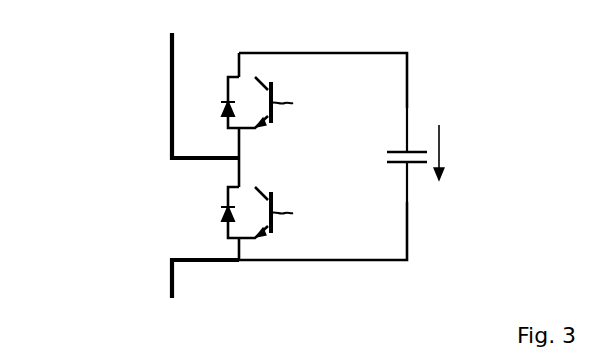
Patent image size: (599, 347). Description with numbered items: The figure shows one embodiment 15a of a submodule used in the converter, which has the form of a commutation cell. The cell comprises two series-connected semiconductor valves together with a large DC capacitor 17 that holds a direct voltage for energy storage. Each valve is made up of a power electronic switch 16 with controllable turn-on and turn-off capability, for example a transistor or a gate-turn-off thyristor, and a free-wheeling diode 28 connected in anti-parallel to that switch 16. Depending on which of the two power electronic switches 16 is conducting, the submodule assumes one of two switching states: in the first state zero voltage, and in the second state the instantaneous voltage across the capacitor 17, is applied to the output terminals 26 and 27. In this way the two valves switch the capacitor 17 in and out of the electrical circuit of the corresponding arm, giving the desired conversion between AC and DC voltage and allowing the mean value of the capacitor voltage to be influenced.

The submodule embodiment 15a is at (112, 149).
The power electronic switch 16 is at (273, 85).
The DC capacitor 17 is at (412, 150).
The output terminal 26 is at (172, 97).
The output terminal 27 is at (170, 262).
The free-wheeling diode 28 is at (224, 100).